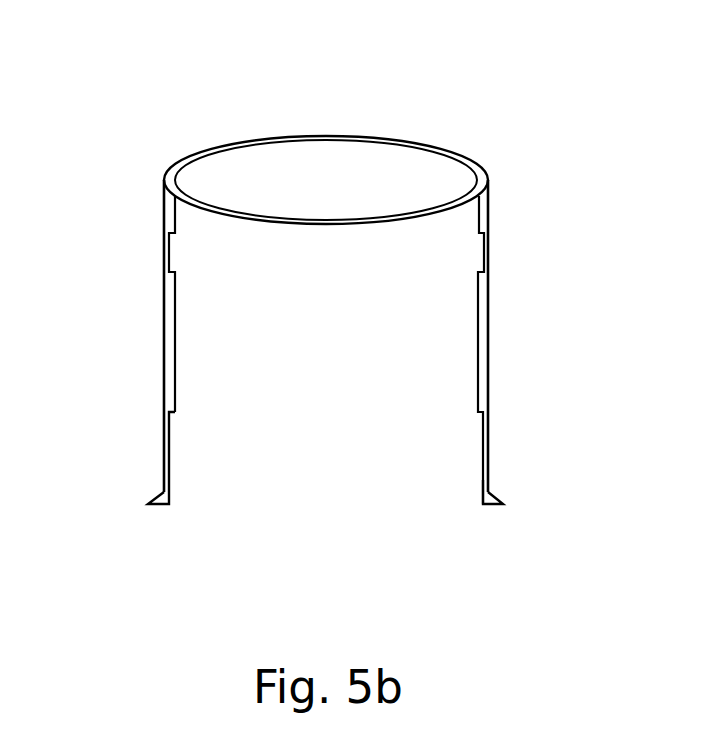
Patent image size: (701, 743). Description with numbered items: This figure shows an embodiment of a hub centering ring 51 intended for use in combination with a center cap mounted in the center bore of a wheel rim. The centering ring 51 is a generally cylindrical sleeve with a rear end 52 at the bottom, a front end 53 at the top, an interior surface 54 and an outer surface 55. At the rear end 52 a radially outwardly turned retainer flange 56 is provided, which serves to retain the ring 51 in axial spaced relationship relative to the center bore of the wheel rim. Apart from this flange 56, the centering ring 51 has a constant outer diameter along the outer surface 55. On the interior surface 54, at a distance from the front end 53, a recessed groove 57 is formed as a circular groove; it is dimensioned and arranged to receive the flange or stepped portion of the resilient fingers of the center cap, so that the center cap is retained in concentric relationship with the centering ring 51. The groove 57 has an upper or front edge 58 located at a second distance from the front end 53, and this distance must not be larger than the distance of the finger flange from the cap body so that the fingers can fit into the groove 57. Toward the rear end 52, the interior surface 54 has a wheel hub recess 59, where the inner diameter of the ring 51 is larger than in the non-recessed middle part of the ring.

The hub centering ring 51 is at (488, 322).
The rear end 52 is at (380, 493).
The front end 53 is at (402, 138).
The interior surface 54 is at (484, 356).
The outer surface 55 is at (164, 357).
The retainer flange 56 is at (503, 500).
The recessed groove 57 is at (167, 253).
The front edge of the recessed groove 58 is at (480, 248).
The wheel hub recess 59 is at (167, 447).